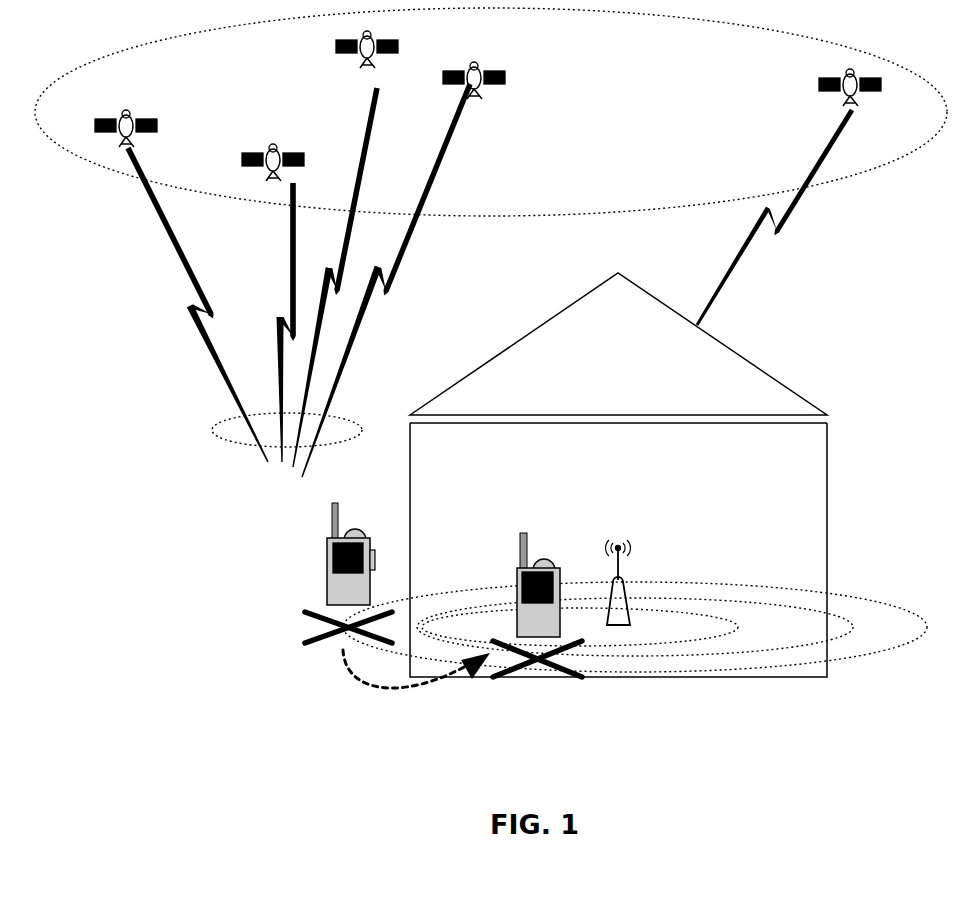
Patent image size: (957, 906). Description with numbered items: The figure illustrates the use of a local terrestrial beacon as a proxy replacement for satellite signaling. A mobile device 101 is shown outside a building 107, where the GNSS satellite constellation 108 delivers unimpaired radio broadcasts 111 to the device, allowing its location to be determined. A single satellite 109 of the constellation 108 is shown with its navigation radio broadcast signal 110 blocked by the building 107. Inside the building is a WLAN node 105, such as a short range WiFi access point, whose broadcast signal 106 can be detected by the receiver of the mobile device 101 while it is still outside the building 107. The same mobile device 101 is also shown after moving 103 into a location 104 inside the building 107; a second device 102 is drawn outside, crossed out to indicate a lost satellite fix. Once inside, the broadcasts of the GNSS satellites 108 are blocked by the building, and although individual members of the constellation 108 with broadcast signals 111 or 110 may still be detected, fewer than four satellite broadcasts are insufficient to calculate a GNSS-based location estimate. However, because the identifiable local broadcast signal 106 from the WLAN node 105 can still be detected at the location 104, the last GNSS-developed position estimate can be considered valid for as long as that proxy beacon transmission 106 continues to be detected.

The mobile device 101 is at (540, 568).
The second handheld radio device outside building 102 is at (325, 573).
The moving 103 is at (416, 690).
The location inside the building 104 is at (537, 682).
The WLAN node 105 is at (624, 563).
The broadcast signal 106 is at (635, 617).
The building 107 is at (618, 475).
The GNSS satellite constellation 108 is at (491, 112).
The satellite 109 is at (869, 101).
The navigation radio broadcast signal 110 is at (775, 217).
The unimpaired radio broadcasts 111 is at (258, 430).